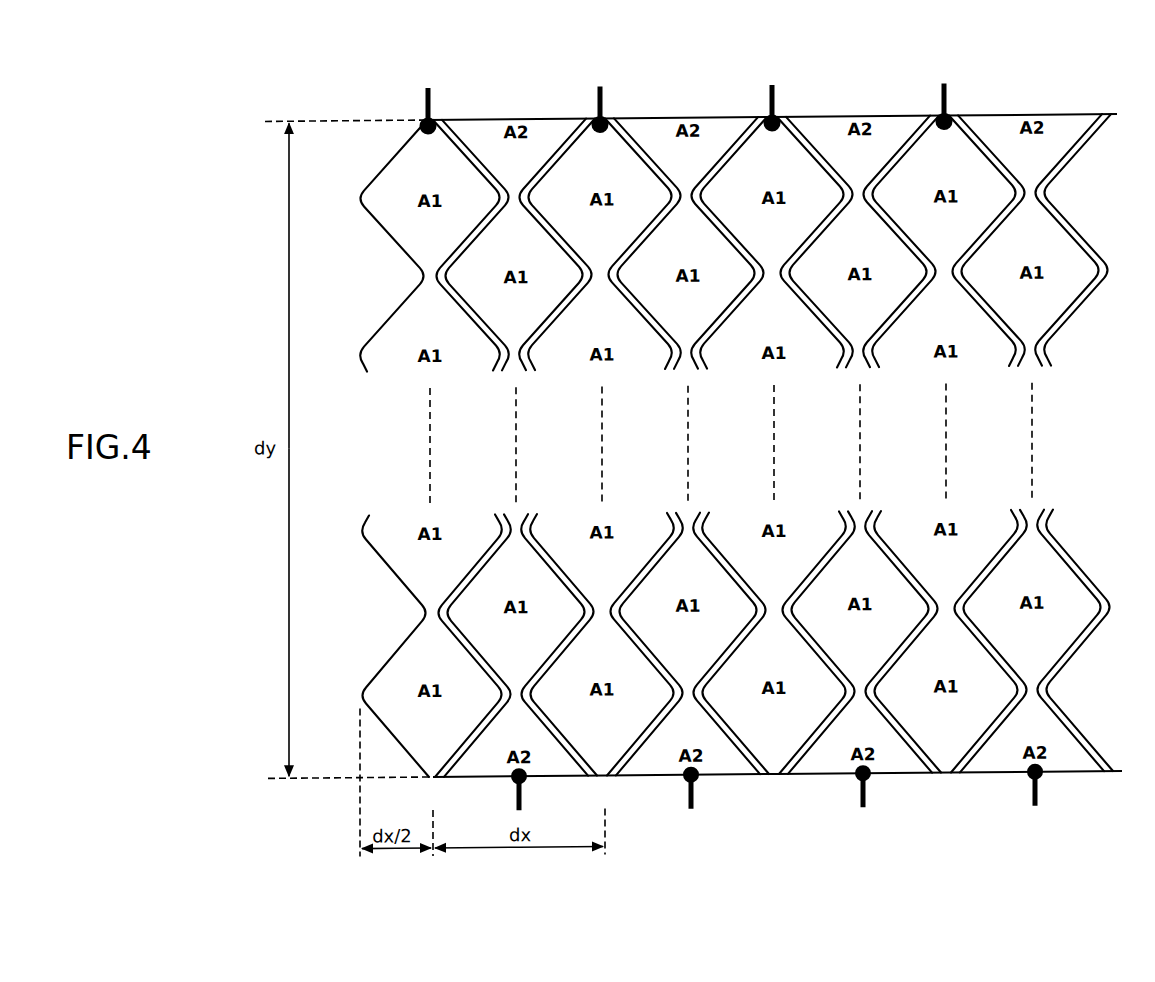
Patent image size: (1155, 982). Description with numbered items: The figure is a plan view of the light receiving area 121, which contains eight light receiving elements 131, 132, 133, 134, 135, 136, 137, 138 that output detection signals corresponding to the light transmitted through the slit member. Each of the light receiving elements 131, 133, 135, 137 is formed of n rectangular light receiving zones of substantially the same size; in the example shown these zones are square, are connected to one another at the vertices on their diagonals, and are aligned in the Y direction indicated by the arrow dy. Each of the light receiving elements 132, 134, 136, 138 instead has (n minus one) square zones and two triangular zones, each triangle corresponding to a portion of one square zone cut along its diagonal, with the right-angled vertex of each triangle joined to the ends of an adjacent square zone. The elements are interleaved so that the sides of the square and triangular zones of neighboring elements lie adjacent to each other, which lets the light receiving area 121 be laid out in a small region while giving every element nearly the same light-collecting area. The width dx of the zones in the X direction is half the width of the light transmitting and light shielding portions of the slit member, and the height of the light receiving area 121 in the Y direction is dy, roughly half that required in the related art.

The light receiving area 121 is at (326, 88).
The light receiving element 131 is at (437, 780).
The light receiving element 132 is at (515, 107).
The light receiving element 133 is at (609, 780).
The light receiving element 134 is at (687, 107).
The light receiving element 135 is at (781, 780).
The light receiving element 136 is at (859, 107).
The light receiving element 137 is at (953, 780).
The light receiving element 138 is at (1032, 107).